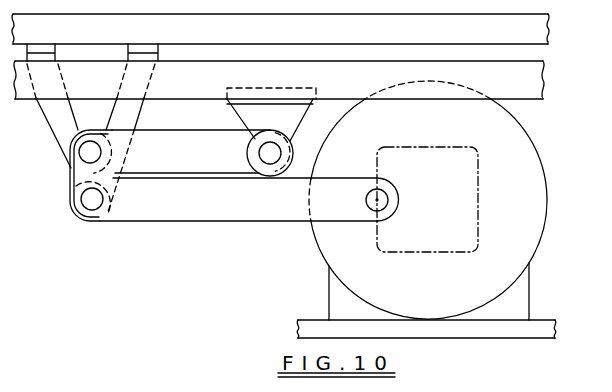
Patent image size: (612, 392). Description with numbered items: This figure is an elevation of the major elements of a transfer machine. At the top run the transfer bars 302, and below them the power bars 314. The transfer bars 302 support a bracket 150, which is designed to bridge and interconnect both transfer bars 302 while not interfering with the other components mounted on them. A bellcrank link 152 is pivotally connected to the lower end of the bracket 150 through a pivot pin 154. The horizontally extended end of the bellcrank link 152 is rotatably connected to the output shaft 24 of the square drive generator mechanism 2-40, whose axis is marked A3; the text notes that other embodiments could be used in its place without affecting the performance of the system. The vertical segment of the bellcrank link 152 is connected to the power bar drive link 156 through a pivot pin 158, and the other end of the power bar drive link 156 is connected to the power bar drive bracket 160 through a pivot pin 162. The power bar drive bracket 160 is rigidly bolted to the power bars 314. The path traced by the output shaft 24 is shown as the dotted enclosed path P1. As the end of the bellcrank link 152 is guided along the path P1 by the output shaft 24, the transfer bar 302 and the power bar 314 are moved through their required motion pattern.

The transfer bar 302 is at (280, 37).
The power bar 314 is at (279, 80).
The bracket 150 is at (60, 133).
The pivot pin 158 is at (88, 154).
The power bar drive link 156 is at (189, 122).
The power bar drive bracket 160 is at (265, 121).
The pivot pin 162 is at (267, 155).
The bellcrank link 152 is at (197, 208).
The pivot pin 154 is at (94, 210).
The output shaft 24 is at (372, 211).
The wheel axis A3 is at (378, 199).
The dotted enclosed path P1 is at (426, 147).
The square drive generator mechanism 2-40 is at (337, 298).